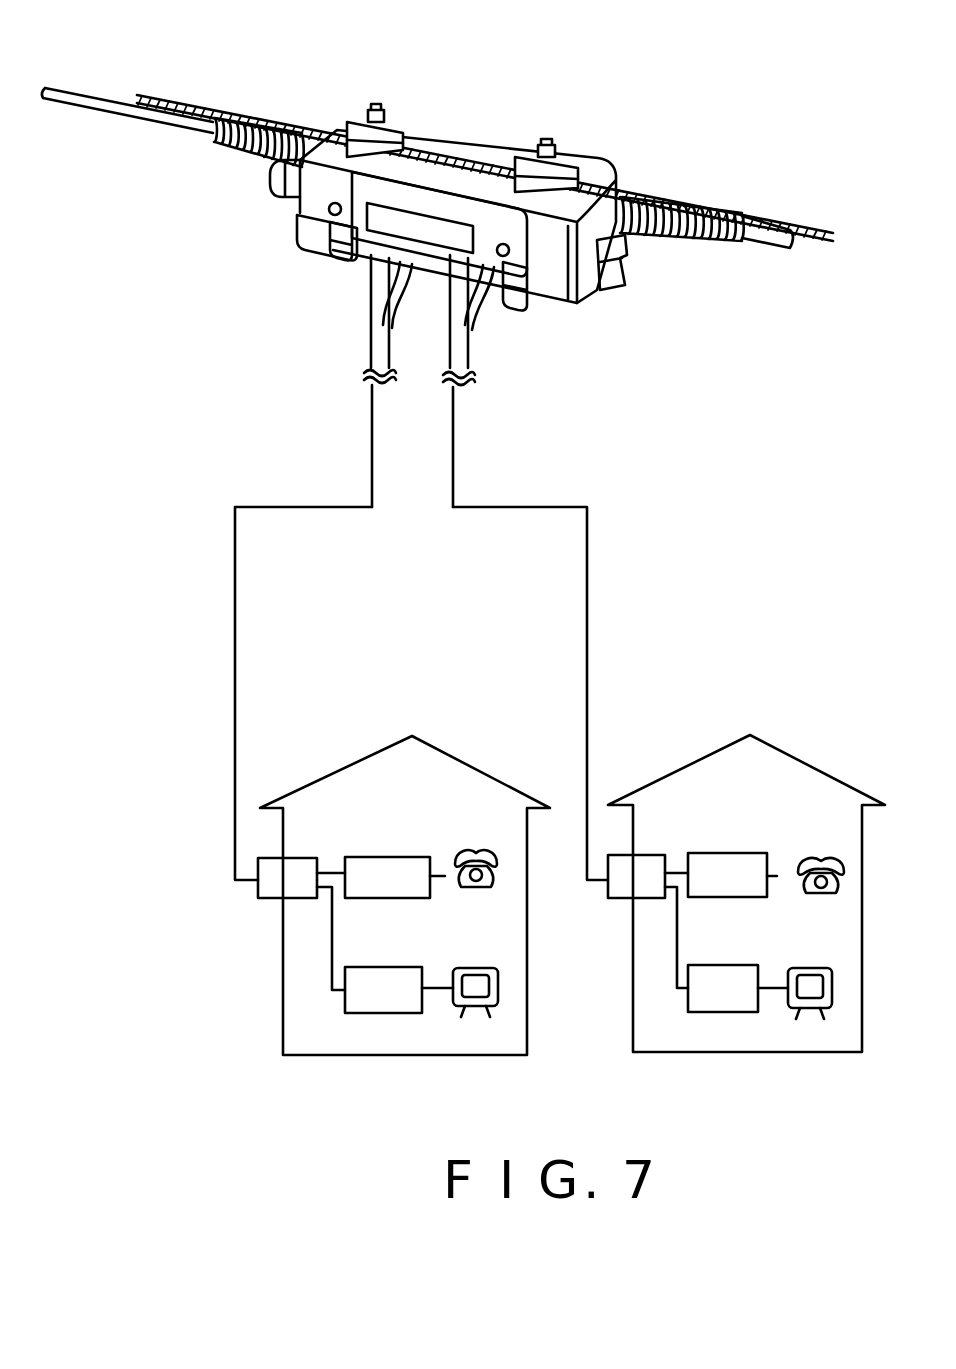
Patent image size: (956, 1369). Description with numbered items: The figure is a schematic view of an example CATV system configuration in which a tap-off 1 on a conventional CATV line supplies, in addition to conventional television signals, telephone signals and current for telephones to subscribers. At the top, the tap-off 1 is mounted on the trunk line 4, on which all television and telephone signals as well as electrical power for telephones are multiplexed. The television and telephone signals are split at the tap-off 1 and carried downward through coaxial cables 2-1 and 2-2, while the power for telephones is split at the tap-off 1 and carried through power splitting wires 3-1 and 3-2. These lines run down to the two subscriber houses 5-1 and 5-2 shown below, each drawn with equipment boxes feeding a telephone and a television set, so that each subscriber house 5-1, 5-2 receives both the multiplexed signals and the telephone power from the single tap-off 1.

The tap-off 1 is at (487, 142).
The coaxial cable 2-1 is at (367, 281).
The coaxial cable 2-2 is at (447, 320).
The power splitting wire 3-1 is at (390, 350).
The power splitting wire 3-2 is at (460, 320).
The trunk line 4 is at (100, 102).
The subscriber house 5-1 is at (375, 792).
The subscriber house 5-2 is at (758, 777).